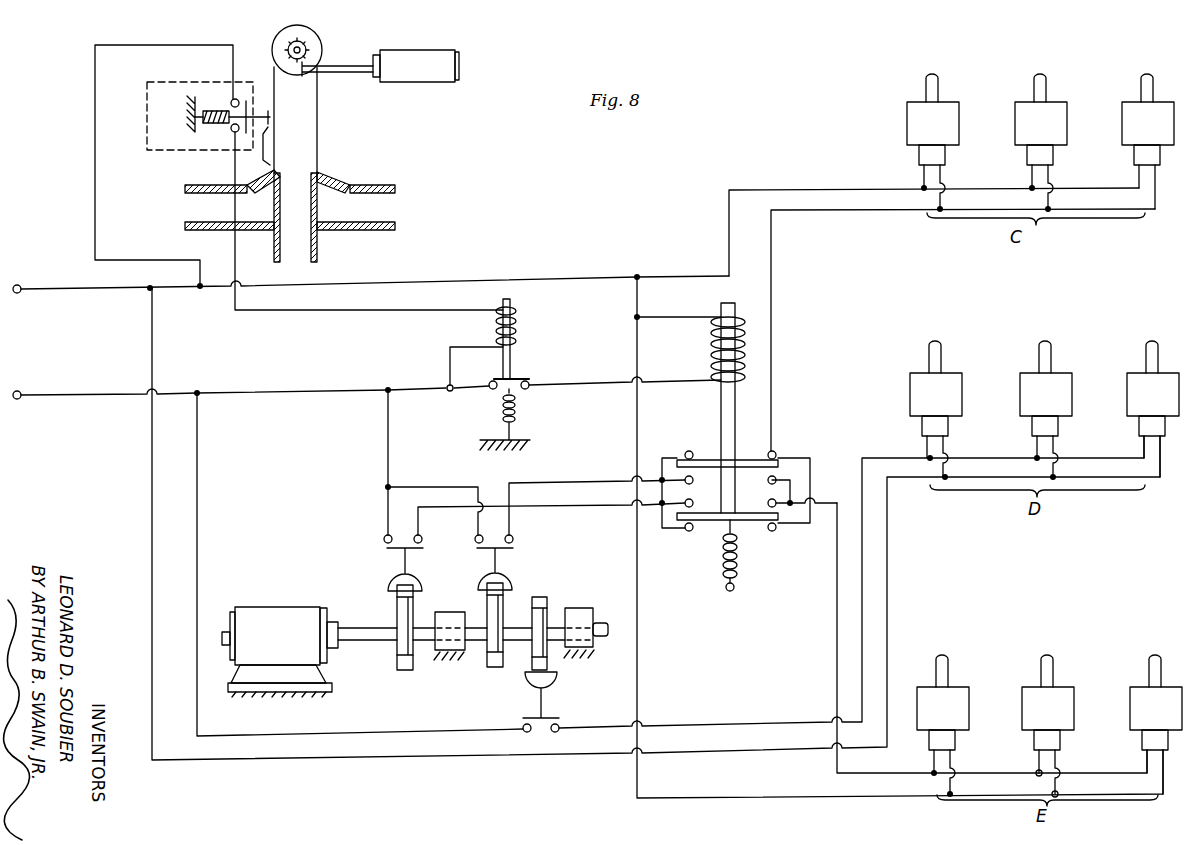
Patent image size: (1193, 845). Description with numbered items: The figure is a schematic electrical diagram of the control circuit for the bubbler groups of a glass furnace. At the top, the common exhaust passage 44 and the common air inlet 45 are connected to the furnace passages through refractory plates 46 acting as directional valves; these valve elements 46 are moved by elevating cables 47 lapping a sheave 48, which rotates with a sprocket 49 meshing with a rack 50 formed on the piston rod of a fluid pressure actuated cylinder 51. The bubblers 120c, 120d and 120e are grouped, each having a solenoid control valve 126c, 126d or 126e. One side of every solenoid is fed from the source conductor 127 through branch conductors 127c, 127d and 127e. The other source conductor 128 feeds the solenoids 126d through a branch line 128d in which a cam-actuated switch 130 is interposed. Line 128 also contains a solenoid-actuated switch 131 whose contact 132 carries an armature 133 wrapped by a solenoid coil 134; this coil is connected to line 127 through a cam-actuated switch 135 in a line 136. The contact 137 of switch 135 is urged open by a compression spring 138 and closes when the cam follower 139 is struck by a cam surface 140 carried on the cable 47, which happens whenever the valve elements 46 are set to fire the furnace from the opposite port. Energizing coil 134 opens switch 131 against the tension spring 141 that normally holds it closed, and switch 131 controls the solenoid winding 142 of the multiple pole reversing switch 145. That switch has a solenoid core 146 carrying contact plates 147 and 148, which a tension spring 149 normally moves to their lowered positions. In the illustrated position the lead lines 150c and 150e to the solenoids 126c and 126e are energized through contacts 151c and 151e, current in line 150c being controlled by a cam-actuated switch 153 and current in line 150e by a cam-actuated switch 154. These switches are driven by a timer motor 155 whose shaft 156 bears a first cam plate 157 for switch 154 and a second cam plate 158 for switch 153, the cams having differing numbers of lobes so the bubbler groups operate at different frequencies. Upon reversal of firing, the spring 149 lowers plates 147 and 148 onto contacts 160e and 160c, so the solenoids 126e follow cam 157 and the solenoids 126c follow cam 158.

The common exhaust passage 44 is at (305, 251).
The common inlet for air 45 is at (306, 187).
The refractory plates 46 is at (275, 205).
The elevating cables 47 is at (318, 162).
The sheave 48 is at (318, 47).
The sprocket 49 is at (303, 47).
The rack 50 is at (308, 72).
The reciprocating fluid pressure actuated cylinder 51 is at (408, 46).
The bubblers 120c is at (1015, 114).
The bubblers 120d is at (1025, 385).
The bubblers 120e is at (1025, 697).
The solenoid control valves 126c is at (1037, 158).
The solenoid control valves 126d is at (1043, 423).
The solenoid control valves 126e is at (1037, 735).
The conductor 127 is at (56, 290).
The branch conductor 127c is at (856, 188).
The branch conductor 127d is at (152, 529).
The branch conductor 127e is at (858, 797).
The source conductor 128 is at (234, 391).
The branch line 128d is at (200, 543).
The cam-actuated switch 130 is at (548, 712).
The solenoid-actuated switch 131 is at (474, 376).
The contact 132 is at (493, 380).
The armature 133 is at (512, 357).
The solenoid coil 134 is at (513, 307).
The cam-actuated switch 135 is at (219, 133).
The line 136 is at (95, 240).
The contact 137 is at (246, 100).
The compression spring 138 is at (205, 110).
The cam follower 139 is at (297, 108).
The cam surface 140 is at (268, 155).
The tension spring 141 is at (520, 412).
The solenoid winding 142 is at (745, 330).
The multiple pole switch 145 is at (715, 450).
The solenoid core 146 is at (732, 400).
The contact plate 147 is at (747, 457).
The contact plate 148 is at (710, 522).
The tension spring 149 is at (735, 565).
The lead line 150c is at (832, 210).
The lead line 150e is at (882, 753).
The contacts 151c is at (687, 452).
The contacts 151e is at (685, 502).
The cam-actuated switch 153 is at (503, 550).
The cam-actuated switch 154 is at (394, 557).
The motor 155 is at (286, 612).
The shaft 156 is at (357, 636).
The first cam plate 157 is at (400, 670).
The second cam plate 158 is at (493, 667).
The contacts 160c is at (686, 530).
The contacts 160e is at (686, 478).